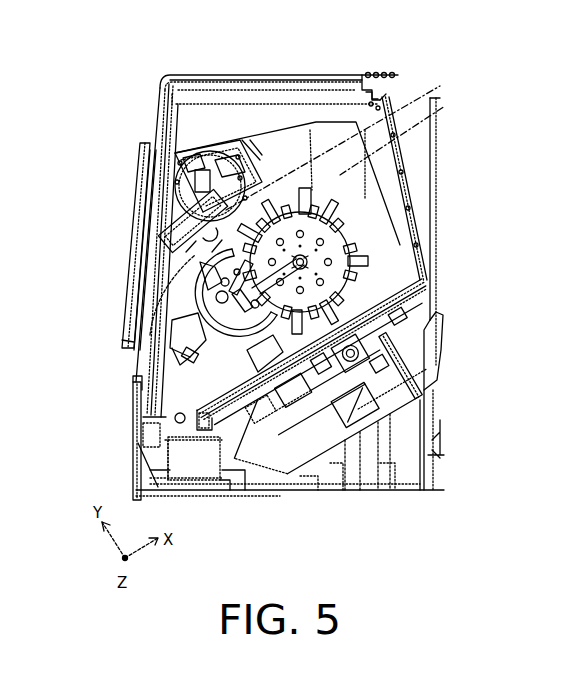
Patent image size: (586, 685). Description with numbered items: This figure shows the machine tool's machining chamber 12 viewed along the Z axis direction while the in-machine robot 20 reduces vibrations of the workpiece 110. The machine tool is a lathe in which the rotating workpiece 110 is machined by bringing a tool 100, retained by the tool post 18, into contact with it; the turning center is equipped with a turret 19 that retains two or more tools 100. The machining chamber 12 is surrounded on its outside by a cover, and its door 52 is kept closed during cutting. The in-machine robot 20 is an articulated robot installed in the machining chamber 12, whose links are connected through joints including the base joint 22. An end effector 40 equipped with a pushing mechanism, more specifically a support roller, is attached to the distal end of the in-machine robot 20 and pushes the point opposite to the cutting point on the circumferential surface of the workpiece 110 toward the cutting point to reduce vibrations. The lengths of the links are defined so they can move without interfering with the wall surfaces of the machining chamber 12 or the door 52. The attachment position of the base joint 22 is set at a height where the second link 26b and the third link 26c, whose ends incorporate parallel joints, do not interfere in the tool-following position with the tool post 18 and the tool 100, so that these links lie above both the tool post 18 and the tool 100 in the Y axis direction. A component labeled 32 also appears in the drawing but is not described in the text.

The machining chamber 12 is at (226, 371).
The turret 19 is at (380, 246).
The tool post 18 is at (311, 354).
The in-machine robot 20 is at (205, 153).
The base joint 22 is at (240, 142).
The second link 26b is at (176, 168).
The third link 26c is at (163, 218).
The support 32 is at (207, 332).
The end effector 40 is at (142, 316).
The door 52 is at (145, 192).
The tool 100 is at (400, 214).
The workpiece 110 is at (160, 278).